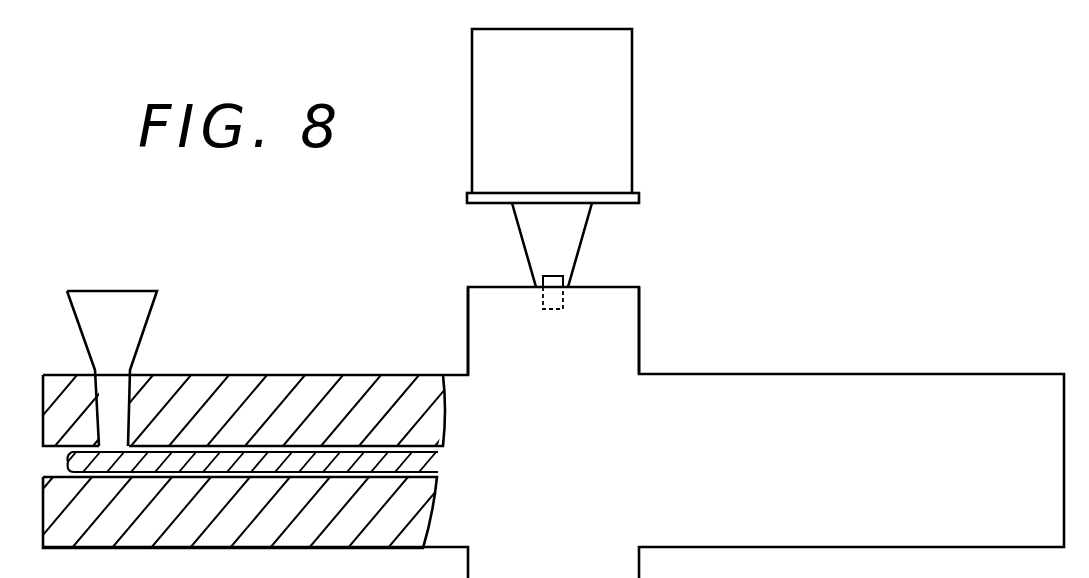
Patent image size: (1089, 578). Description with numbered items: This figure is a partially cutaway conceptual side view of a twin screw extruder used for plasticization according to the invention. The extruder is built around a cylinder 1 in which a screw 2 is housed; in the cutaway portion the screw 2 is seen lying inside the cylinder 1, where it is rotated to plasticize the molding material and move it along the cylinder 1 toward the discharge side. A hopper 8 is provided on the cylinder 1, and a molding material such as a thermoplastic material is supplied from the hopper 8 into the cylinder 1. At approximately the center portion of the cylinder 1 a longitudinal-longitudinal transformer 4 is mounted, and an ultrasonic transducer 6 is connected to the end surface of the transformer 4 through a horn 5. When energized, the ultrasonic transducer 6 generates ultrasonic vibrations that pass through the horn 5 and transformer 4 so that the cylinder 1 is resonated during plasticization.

The cylinder 1 is at (848, 378).
The screw 2 is at (223, 458).
The longitudinal-longitudinal (L-L) transformer 4 is at (624, 318).
The horn 5 is at (570, 237).
The ultrasonic transducer 6 is at (620, 110).
The hopper 8 is at (137, 329).